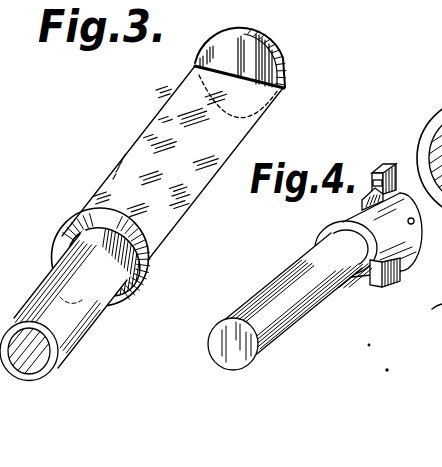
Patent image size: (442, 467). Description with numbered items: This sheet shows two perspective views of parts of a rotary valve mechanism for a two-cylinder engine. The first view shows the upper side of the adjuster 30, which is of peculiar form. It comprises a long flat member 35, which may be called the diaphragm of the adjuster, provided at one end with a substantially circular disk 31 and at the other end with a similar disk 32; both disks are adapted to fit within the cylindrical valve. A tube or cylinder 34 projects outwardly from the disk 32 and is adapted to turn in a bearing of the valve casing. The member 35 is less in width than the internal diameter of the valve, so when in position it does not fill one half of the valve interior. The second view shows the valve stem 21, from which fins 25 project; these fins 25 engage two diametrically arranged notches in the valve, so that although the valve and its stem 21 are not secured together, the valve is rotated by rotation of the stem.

In FIG. 4, the valve stem 21 is at (290, 301).
In FIG. 4, the fins 25 is at (384, 164).
In FIG. 3, the adjuster 30 is at (187, 208).
In FIG. 3, the disk 31 is at (90, 210).
In FIG. 3, the disk 32 is at (279, 44).
In FIG. 3, the tube 34 is at (65, 305).
In FIG. 3, the member 35 is at (166, 162).